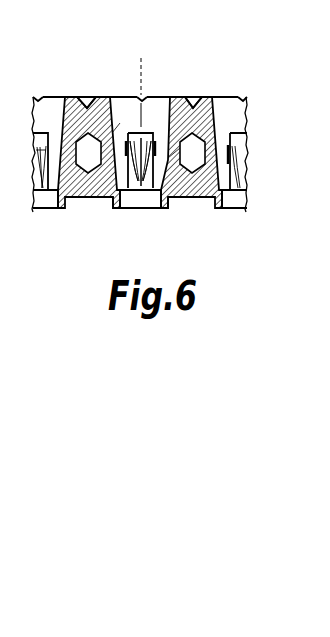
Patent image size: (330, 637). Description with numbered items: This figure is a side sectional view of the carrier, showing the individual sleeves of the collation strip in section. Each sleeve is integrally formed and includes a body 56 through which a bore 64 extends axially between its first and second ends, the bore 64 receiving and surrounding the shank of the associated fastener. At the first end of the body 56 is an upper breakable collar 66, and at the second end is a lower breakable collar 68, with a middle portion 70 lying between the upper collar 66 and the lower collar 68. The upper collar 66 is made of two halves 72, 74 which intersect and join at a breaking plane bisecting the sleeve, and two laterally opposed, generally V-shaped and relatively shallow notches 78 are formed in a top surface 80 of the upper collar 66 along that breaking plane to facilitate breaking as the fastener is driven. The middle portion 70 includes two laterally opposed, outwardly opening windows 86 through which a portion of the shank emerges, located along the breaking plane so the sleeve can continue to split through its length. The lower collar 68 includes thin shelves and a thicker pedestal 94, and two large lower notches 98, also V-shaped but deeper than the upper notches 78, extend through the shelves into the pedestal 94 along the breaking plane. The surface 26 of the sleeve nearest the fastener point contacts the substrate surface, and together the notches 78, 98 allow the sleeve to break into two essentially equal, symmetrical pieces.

The surface 26 is at (166, 210).
The body 56 is at (74, 99).
The bore 64 is at (232, 117).
The upper breakable collar 66 is at (205, 97).
The lower breakable collar 68 is at (224, 194).
The middle portion 70 is at (171, 145).
The half of upper collar 72 is at (88, 106).
The half of upper collar 74 is at (181, 99).
The notches 78 is at (40, 97).
The top surface 80 is at (204, 96).
The windows 86 is at (153, 210).
The pedestal 94 is at (167, 205).
The lower notches 98 is at (146, 146).